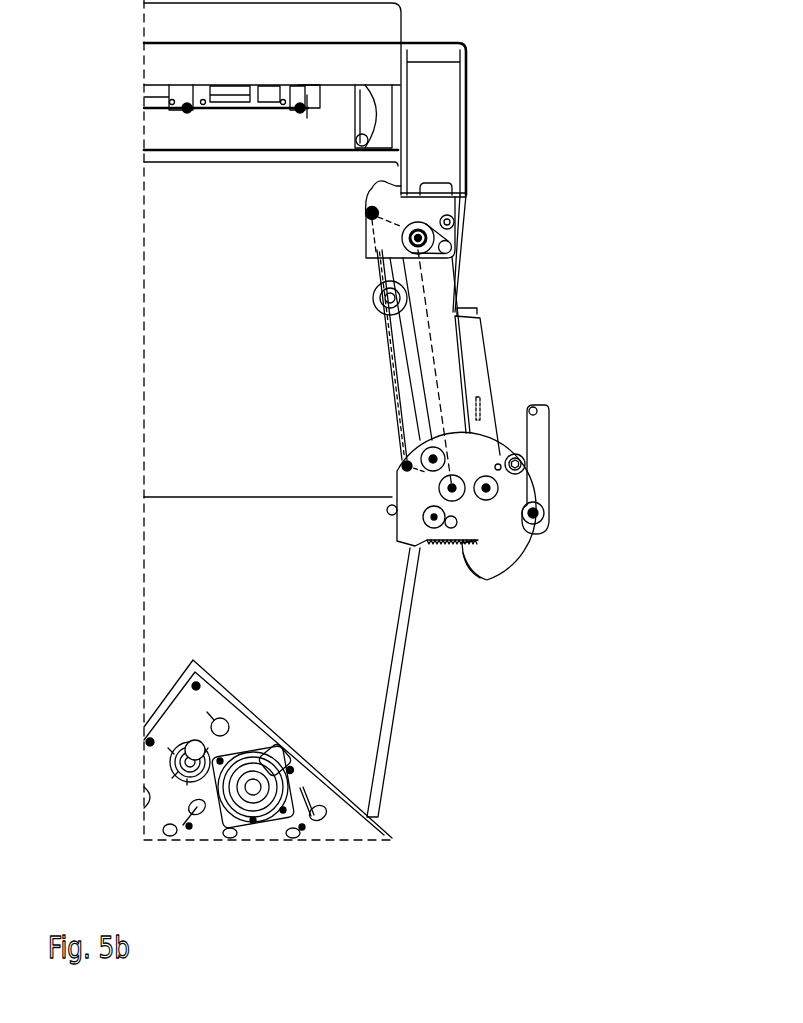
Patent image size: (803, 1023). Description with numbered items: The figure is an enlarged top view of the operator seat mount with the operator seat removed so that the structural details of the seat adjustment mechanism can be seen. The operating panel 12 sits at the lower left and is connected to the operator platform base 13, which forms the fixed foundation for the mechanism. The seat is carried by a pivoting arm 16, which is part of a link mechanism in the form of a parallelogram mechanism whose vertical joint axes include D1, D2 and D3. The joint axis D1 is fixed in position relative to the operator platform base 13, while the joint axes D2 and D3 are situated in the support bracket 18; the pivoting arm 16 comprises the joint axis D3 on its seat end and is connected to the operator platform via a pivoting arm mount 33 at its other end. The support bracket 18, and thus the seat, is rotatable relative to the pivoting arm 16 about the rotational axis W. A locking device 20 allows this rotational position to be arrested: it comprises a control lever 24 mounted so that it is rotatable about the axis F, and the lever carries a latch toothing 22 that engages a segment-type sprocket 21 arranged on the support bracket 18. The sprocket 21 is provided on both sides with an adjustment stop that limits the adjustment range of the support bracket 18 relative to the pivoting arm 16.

The operating panel 12 is at (323, 822).
The operator platform base 13 is at (357, 730).
The pivoting arm 16 is at (433, 300).
The support bracket 18 is at (472, 465).
The locking device 20 is at (590, 414).
The segment-type sprocket 21 is at (443, 545).
The latch toothing 22 is at (467, 545).
The control lever 24 is at (540, 493).
The pivoting arm mount 33 is at (443, 212).
The joint axis D1 is at (372, 213).
The joint axis D2 is at (405, 468).
The joint axis D3 is at (455, 492).
The axis F is at (548, 512).
The rotational axis W is at (452, 490).